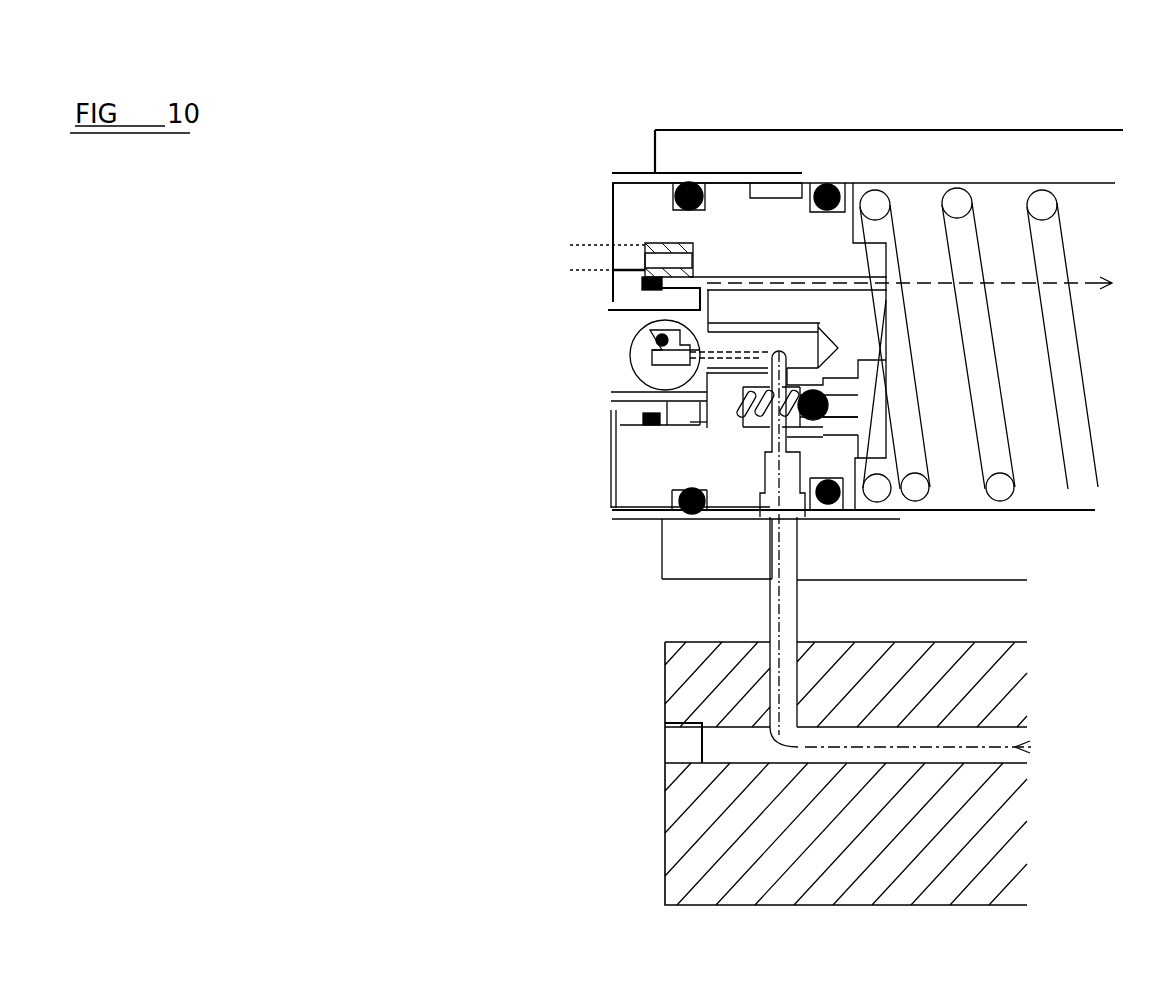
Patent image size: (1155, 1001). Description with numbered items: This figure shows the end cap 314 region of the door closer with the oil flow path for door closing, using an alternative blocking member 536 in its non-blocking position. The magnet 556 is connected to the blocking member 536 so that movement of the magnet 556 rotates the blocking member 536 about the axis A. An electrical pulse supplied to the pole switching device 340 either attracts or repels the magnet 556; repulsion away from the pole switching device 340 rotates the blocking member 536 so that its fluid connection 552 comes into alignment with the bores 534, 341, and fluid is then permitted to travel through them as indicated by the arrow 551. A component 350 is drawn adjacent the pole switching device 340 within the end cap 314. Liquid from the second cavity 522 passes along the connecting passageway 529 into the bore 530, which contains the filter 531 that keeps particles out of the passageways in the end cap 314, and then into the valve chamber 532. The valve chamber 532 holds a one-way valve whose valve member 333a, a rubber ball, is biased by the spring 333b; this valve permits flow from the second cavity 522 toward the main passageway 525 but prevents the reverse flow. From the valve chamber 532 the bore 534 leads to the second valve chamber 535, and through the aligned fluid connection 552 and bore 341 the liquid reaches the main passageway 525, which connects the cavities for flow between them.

The end cap 314 is at (642, 207).
The pole switching device 340 is at (655, 240).
The bore 341 is at (760, 283).
The retention element 350 is at (546, 257).
The second cavity 522 is at (1078, 350).
The bore 534 is at (760, 347).
The arrow 551 is at (1067, 285).
The fluid connection 552 is at (655, 326).
The axis A is at (655, 366).
The magnet 556 is at (645, 372).
The blocking member 536 is at (657, 367).
The second valve chamber 535 is at (690, 400).
The valve chamber 532 is at (740, 425).
The bore 530 is at (745, 415).
The filter 531 is at (757, 478).
The connecting passageway 529 is at (795, 617).
The main passageway 525 is at (943, 755).
The valve member 333a is at (845, 405).
The spring 333b is at (790, 428).